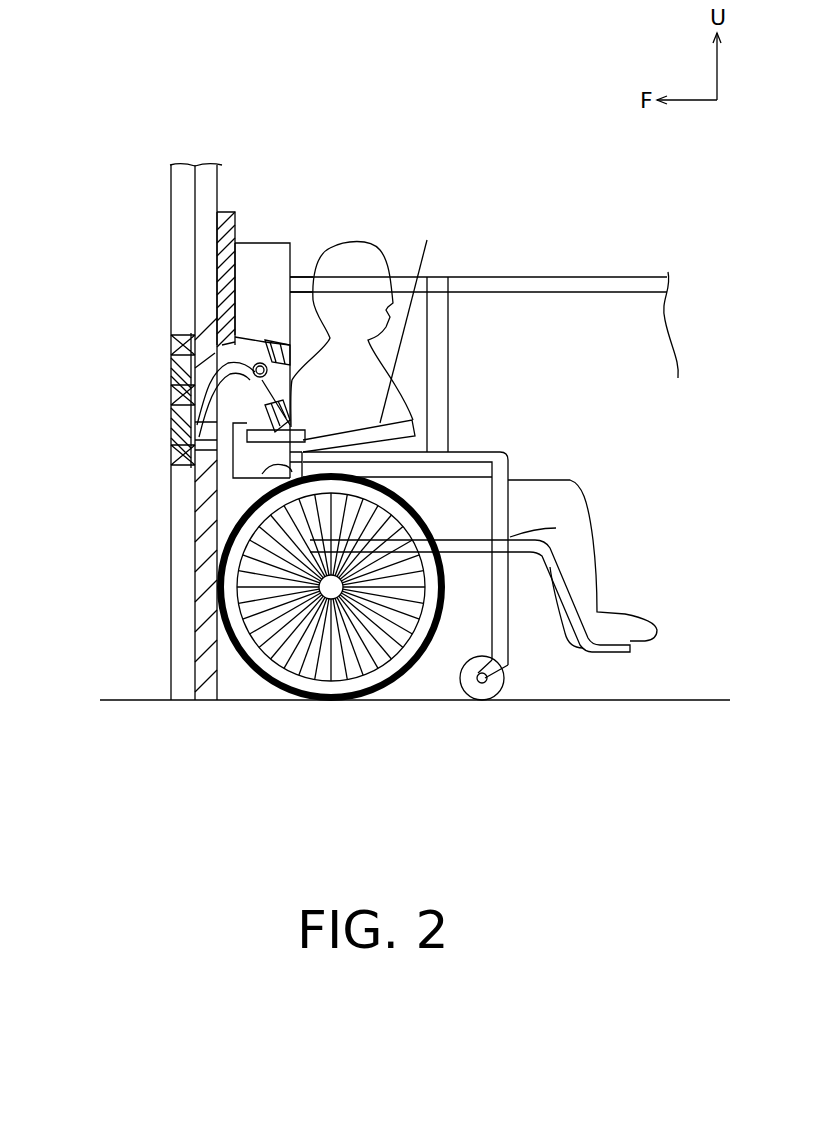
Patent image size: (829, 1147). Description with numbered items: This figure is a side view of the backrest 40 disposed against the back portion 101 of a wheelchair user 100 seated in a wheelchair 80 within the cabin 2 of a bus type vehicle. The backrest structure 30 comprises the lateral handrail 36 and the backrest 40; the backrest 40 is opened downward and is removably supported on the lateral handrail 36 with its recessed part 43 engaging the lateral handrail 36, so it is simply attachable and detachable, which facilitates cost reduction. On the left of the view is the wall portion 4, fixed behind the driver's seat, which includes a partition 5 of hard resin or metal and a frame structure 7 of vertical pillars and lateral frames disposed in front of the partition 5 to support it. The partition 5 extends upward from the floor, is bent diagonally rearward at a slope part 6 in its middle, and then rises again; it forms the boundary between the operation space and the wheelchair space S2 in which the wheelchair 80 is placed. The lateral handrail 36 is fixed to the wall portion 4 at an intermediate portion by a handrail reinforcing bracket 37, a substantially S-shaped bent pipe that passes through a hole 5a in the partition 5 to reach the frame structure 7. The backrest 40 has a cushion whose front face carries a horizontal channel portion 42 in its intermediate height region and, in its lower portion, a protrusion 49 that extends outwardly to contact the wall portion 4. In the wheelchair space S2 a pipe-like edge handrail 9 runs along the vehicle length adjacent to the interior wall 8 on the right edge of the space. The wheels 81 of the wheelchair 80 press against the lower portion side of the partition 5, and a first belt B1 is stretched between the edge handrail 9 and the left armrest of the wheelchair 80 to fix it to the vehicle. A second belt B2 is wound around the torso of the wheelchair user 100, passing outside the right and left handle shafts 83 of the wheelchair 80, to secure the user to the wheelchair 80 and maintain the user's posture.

The cabin 2 is at (687, 566).
The wall portion 4 is at (224, 210).
The partition 5 is at (265, 228).
The hole 5a is at (207, 380).
The slope part 6 is at (208, 337).
The frame structure 7 is at (178, 290).
The interior wall 8 is at (651, 346).
The edge handrail 9 is at (572, 277).
The backrest structure 30 is at (237, 225).
The lateral handrail 36 is at (268, 368).
The handrail reinforcing bracket 37 is at (203, 422).
The backrest 40 is at (291, 243).
The channel portion 42 is at (270, 402).
The recessed part 43 is at (222, 400).
The protrusion 49 is at (227, 452).
The wheelchair 80 is at (470, 452).
The wheels 81 is at (412, 668).
The handle shafts 83 is at (262, 474).
The wheelchair user 100 is at (352, 242).
The back portion 101 is at (247, 435).
The first belt B1 is at (449, 360).
The second belt B2 is at (410, 319).
The wheelchair space S2 is at (702, 448).